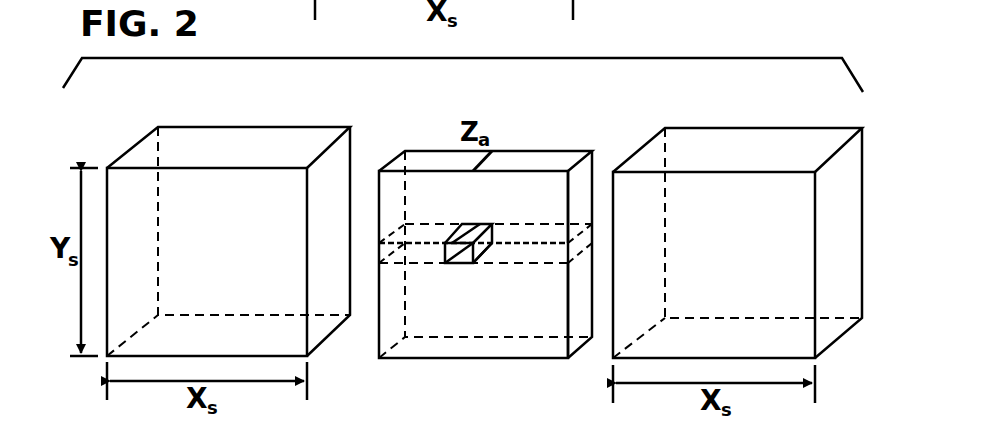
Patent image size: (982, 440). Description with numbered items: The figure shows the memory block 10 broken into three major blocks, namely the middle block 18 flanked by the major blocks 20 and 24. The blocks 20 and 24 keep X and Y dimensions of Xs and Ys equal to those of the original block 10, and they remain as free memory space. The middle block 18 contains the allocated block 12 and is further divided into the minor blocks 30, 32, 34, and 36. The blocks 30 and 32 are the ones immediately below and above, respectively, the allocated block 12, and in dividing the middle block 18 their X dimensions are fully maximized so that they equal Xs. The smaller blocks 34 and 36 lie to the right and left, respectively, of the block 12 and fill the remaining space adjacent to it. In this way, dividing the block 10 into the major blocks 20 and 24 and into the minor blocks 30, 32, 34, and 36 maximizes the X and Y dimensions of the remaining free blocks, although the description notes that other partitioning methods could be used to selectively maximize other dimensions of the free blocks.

The memory block 10 is at (555, 123).
The allocated block 12 is at (481, 257).
The middle block 18 is at (396, 156).
The major block 20 is at (131, 146).
The major block 24 is at (631, 158).
The minor block 30 is at (580, 300).
The minor block 32 is at (578, 184).
The minor block 34 is at (590, 250).
The minor block 36 is at (382, 245).